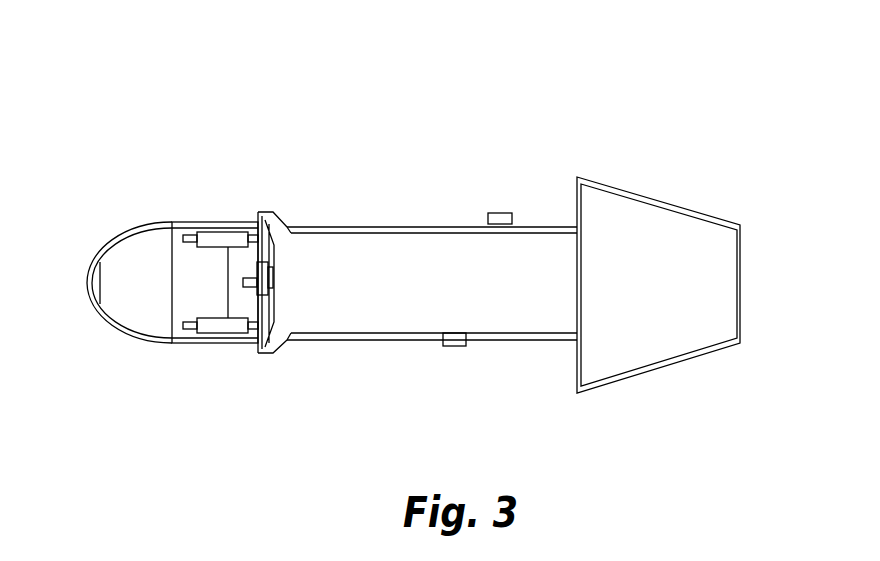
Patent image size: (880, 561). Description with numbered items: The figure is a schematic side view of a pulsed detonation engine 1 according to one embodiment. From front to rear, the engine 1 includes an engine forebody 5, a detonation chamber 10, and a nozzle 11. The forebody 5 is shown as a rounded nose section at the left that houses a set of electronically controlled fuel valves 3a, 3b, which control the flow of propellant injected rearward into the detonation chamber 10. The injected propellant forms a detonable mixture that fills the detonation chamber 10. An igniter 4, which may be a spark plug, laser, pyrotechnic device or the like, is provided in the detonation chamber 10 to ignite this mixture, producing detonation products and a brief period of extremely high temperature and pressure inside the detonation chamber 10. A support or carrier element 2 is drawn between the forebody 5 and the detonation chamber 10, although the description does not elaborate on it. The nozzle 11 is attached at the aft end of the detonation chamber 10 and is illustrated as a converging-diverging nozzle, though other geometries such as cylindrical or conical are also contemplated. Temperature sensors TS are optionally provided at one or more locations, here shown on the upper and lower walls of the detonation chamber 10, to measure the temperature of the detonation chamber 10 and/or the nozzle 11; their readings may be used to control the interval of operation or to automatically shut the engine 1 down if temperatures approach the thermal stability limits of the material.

The pulsed detonation engine 1 is at (123, 92).
The support / carrier piece 2 is at (283, 222).
The electronically controlled fuel valve 3a is at (215, 235).
The electronically controlled fuel valve 3b is at (212, 338).
The igniter 4 is at (262, 283).
The engine forebody 5 is at (105, 322).
The detonation chamber 10 is at (363, 248).
The nozzle 11 is at (658, 200).
The temperature sensors TS is at (500, 213).